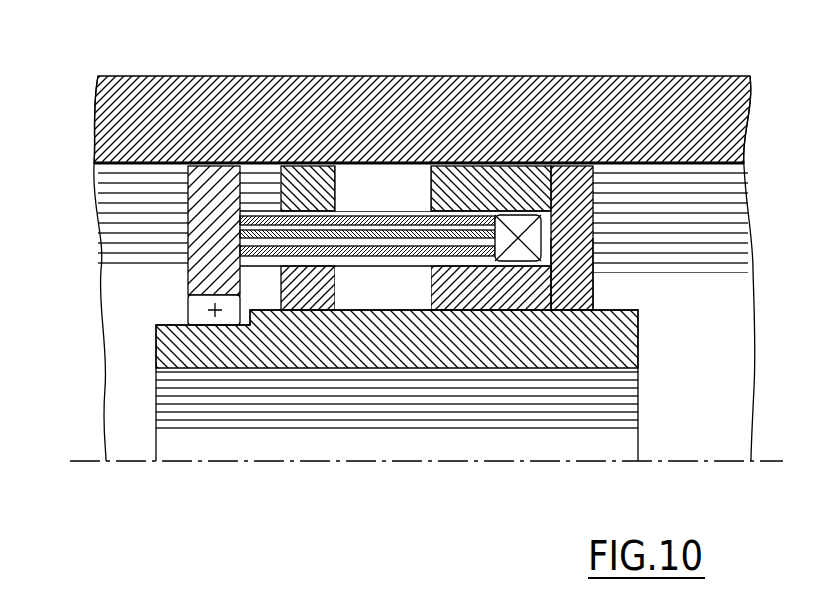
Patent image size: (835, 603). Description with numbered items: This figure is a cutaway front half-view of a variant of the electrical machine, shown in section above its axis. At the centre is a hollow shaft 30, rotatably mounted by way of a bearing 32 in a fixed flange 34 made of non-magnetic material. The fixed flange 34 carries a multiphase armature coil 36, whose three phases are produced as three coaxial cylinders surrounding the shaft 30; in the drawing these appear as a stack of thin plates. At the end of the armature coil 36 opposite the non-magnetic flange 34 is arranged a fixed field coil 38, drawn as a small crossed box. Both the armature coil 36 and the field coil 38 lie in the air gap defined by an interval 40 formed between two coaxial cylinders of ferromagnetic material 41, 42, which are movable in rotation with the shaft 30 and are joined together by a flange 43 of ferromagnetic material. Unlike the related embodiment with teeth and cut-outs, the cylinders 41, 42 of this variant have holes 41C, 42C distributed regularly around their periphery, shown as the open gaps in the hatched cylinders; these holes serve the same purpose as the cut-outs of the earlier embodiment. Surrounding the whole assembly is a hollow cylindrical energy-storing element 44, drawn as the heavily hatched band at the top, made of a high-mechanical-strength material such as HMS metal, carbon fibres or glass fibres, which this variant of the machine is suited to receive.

The hollow shaft 30 is at (617, 325).
The bearing 32 is at (190, 302).
The fixed flange 34 is at (188, 222).
The multiphase armature coil 36 is at (386, 246).
The fixed field coil 38 is at (535, 234).
The interval 40 is at (560, 204).
The toothed cylinder of ferromagnetic material 41 is at (303, 297).
The holes 41C is at (378, 280).
The toothed cylinder of ferromagnetic material 42 is at (322, 178).
The holes 42C is at (410, 176).
The flange of ferromagnetic material 43 is at (585, 288).
The hollow cylindrical energy-storing element 44 is at (513, 69).